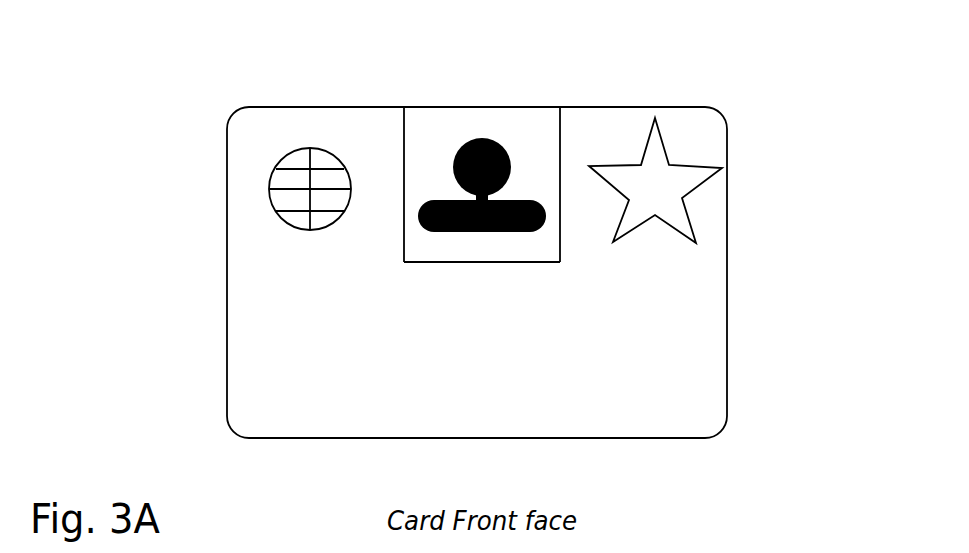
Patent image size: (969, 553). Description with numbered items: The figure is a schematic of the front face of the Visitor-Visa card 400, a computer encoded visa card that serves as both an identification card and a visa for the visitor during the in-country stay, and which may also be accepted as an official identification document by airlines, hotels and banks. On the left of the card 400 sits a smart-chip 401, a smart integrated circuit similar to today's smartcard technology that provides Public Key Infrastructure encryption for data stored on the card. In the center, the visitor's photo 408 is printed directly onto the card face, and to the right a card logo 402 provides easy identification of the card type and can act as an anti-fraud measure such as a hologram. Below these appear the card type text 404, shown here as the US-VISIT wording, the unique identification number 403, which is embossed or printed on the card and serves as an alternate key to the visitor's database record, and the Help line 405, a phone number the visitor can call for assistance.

The Visitor-Visa card 400 is at (268, 106).
The smart-chip 401 is at (278, 179).
The card logo 402 is at (665, 151).
The unique identification number 403 is at (570, 346).
The card type text 404 is at (597, 304).
The Help line 405 is at (367, 391).
The visitor's photo 408 is at (529, 138).